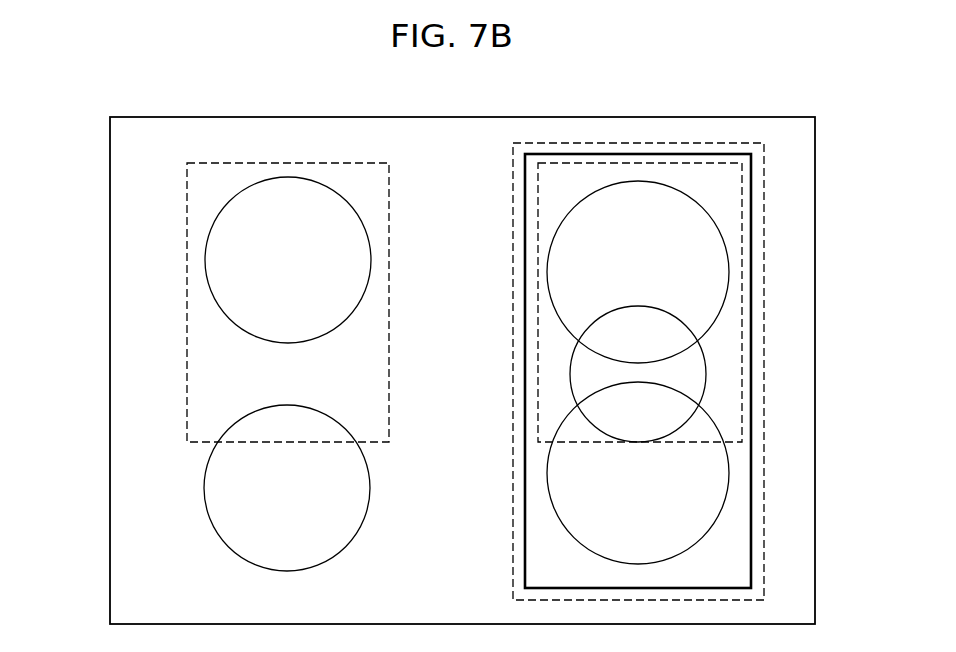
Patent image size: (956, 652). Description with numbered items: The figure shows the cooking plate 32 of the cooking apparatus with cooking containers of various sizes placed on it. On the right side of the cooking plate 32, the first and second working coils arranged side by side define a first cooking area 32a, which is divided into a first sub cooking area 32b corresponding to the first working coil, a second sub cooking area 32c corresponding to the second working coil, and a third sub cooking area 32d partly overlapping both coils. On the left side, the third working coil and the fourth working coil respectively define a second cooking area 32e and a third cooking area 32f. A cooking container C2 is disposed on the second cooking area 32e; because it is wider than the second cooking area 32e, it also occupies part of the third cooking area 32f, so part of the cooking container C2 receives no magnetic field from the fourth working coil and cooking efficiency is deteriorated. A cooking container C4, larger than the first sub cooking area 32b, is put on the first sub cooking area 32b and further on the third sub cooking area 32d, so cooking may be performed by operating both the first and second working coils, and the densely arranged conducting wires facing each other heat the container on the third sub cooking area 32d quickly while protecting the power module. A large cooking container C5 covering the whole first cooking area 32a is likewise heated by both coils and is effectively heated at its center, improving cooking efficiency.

The cooking plate 32 is at (140, 193).
The first cooking area 32a is at (752, 222).
The first sub cooking area 32b is at (730, 270).
The second sub cooking area 32c is at (731, 473).
The third sub cooking area 32d is at (706, 372).
The second cooking area 32e is at (205, 258).
The third cooking area 32f is at (203, 487).
The cooking container C2 is at (186, 361).
The cooking container C4 is at (537, 201).
The cooking container C5 is at (513, 261).